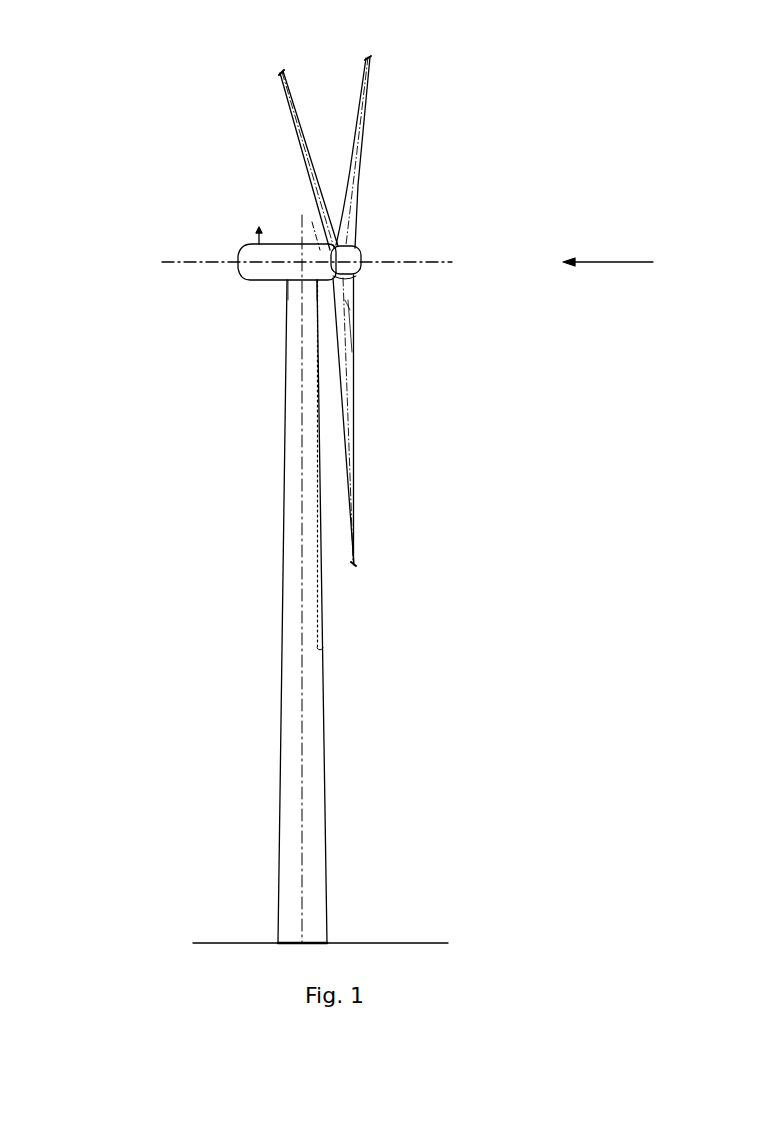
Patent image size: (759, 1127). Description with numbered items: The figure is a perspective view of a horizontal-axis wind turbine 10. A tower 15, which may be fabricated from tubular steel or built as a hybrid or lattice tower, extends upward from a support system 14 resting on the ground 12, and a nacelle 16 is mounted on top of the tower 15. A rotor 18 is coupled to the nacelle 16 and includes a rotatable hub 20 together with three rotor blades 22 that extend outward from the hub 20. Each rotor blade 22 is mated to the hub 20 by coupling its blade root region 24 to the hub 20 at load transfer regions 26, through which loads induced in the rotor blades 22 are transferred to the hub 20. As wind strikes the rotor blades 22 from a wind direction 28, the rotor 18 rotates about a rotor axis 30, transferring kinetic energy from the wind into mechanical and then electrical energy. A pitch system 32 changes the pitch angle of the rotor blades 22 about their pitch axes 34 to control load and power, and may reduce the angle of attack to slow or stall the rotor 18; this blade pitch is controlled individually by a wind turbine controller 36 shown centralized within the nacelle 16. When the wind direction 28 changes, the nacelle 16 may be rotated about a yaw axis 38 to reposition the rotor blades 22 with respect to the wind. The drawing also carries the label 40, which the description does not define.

The wind turbine 10 is at (94, 78).
The ground 12 is at (213, 943).
The support system 14 is at (272, 943).
The tower 15 is at (296, 590).
The nacelle 16 is at (262, 281).
The rotor 18 is at (370, 180).
The rotatable hub 20 is at (361, 258).
The rotor blade 22 is at (297, 130).
The blade root region 24 is at (352, 352).
The load transfer regions 26 is at (352, 278).
The wind direction 28 is at (621, 262).
The rotor axis 30 is at (425, 265).
The pitch system 32 is at (350, 308).
The pitch axes 34 is at (280, 72).
The wind turbine controller 36 is at (288, 305).
The yaw axis 38 is at (322, 648).
The yaw axis 40 is at (312, 220).